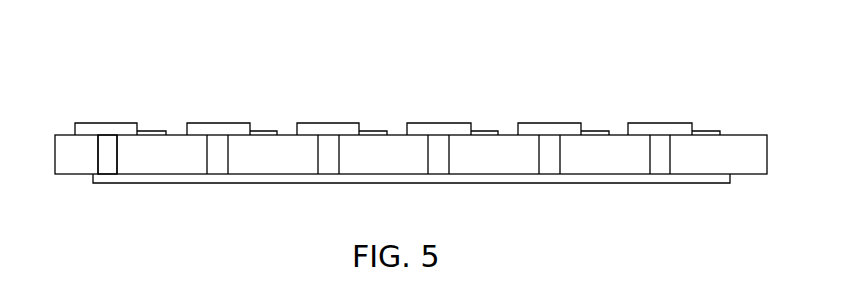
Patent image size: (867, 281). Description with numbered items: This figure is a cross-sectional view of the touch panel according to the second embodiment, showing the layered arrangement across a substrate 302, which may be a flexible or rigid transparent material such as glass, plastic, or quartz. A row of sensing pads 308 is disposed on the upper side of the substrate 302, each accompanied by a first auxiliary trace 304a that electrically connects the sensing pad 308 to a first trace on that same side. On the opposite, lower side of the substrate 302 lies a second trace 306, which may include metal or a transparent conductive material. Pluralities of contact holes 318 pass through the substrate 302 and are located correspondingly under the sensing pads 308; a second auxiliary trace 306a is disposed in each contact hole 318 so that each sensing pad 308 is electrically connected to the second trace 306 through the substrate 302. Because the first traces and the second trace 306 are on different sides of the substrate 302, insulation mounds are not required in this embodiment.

The substrate 302 is at (62, 134).
The sensing pad 308 is at (110, 123).
The first auxiliary trace 304a is at (148, 131).
The contact hole 318 is at (95, 149).
The second auxiliary trace 306a is at (108, 162).
The second trace 306 is at (92, 175).